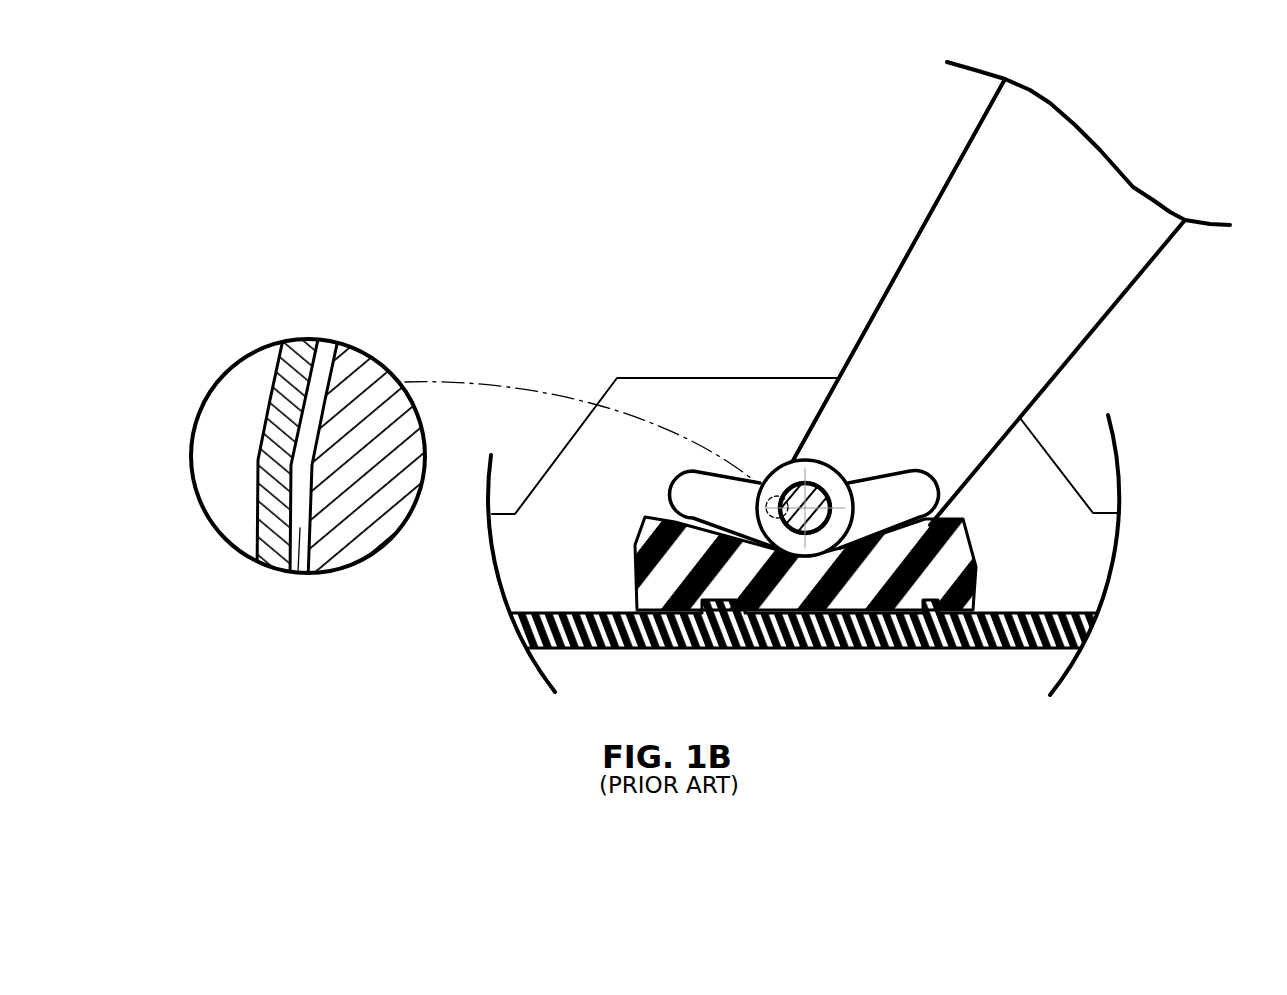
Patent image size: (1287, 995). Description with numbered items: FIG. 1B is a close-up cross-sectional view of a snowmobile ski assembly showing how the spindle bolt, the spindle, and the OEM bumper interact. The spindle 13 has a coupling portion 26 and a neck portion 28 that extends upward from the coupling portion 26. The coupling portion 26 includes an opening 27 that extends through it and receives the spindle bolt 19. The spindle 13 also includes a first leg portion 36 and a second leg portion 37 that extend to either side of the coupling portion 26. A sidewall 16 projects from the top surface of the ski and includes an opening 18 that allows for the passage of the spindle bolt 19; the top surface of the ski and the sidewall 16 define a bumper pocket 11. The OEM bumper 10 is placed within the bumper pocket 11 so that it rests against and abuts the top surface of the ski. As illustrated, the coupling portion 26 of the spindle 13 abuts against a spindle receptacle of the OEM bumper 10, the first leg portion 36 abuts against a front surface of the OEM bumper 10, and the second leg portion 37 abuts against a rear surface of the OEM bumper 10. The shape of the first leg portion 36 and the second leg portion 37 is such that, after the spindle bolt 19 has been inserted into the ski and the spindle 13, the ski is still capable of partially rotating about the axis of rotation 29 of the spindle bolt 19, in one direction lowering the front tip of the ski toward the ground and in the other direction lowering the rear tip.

The OEM bumper 10 is at (963, 517).
The bumper pocket 11 is at (565, 561).
The spindle 13 is at (935, 478).
The sidewall 16 is at (614, 379).
The opening 18 is at (867, 477).
The spindle bolt 19 is at (770, 518).
The coupling portion 26 is at (780, 447).
The opening 27 is at (300, 530).
The neck portion 28 is at (948, 222).
The axis of rotation 29 is at (830, 468).
The first leg portion 36 is at (697, 493).
The second leg portion 37 is at (897, 498).